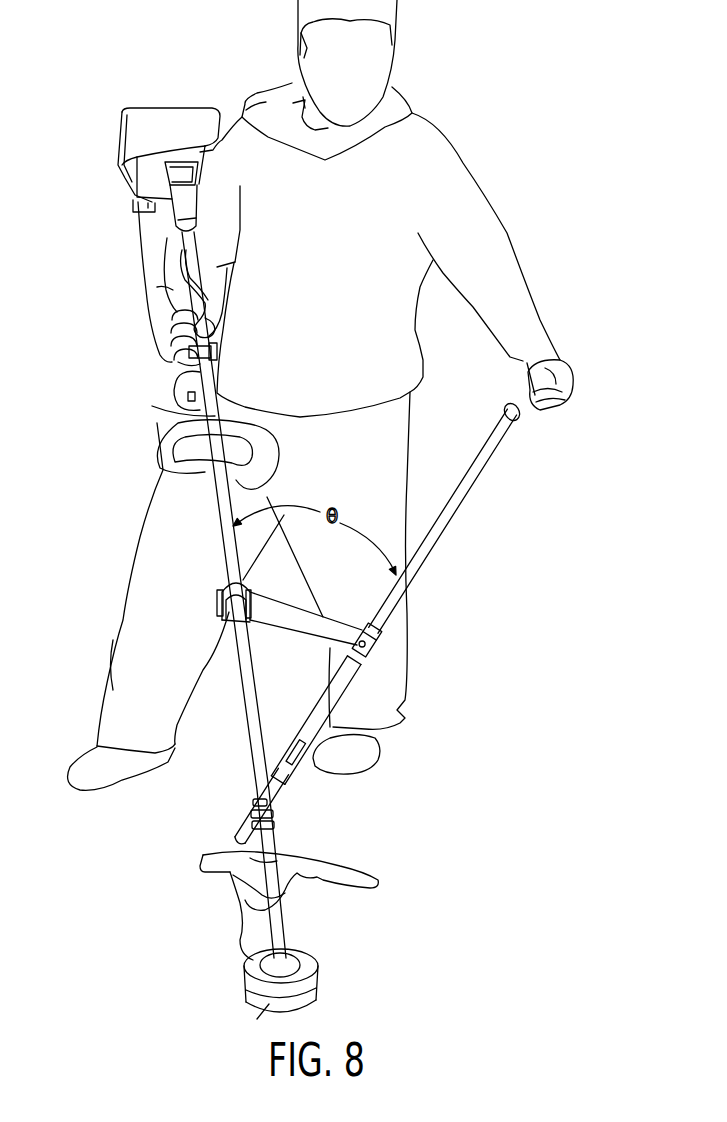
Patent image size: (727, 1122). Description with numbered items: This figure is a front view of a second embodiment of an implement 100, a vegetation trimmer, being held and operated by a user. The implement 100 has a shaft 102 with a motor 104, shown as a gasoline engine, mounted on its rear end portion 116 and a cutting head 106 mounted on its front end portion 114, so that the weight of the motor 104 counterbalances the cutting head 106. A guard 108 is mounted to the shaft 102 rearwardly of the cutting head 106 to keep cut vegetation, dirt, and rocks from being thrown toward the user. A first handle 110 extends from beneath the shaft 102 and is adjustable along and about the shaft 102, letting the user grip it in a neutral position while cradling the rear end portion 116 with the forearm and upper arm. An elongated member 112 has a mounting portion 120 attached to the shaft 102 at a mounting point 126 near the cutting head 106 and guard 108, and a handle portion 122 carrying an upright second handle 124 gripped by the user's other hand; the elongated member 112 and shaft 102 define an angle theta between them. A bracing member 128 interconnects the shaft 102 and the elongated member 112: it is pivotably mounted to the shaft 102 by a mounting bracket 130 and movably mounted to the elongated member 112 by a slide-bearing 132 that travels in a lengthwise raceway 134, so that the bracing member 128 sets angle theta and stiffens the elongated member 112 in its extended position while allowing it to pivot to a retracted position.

The implement 100 is at (133, 382).
The shaft 102 is at (245, 668).
The motor 104 is at (147, 120).
The cutting head 106 is at (307, 964).
The guard 108 is at (337, 866).
The first handle 110 is at (176, 393).
The elongated member 112 is at (376, 626).
The front end portion 114 is at (228, 906).
The rear end portion 116 is at (135, 273).
The mounting portion 120 is at (292, 798).
The handle portion 122 is at (456, 540).
The second handle 124 is at (533, 413).
The mounting point 126 is at (257, 797).
The bracing member 128 is at (263, 606).
The mounting bracket 130 is at (226, 596).
The slide-bearing 132 is at (360, 640).
The raceway 134 is at (327, 708).